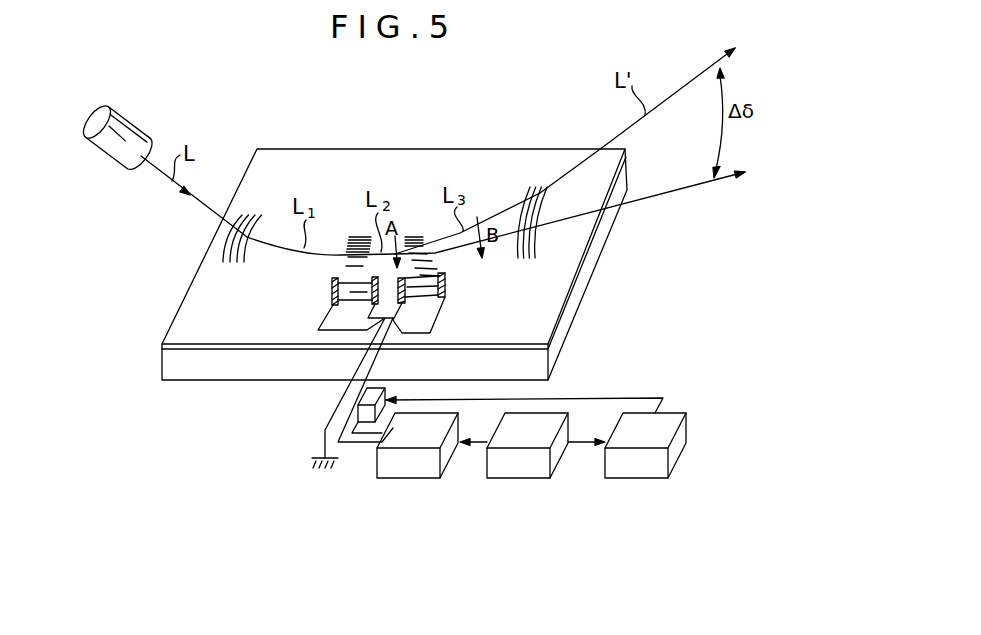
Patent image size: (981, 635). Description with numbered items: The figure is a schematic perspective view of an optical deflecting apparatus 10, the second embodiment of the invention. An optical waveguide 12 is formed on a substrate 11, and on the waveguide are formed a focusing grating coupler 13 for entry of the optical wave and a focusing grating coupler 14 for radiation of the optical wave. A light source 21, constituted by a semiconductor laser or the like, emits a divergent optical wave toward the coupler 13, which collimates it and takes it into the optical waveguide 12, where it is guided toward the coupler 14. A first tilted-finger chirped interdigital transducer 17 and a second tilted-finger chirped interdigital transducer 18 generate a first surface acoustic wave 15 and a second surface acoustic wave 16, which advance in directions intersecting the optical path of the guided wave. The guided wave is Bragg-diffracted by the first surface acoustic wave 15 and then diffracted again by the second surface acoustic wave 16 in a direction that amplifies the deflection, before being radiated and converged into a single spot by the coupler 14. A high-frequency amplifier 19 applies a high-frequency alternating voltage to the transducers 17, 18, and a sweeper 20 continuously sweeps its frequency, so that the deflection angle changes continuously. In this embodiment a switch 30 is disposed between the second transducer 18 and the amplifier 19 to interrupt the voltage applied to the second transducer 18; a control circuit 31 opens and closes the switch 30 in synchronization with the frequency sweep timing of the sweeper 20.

The optical deflecting apparatus 10 is at (492, 130).
The substrate 11 is at (260, 368).
The optical waveguide 12 is at (192, 309).
The focusing grating coupler for entry of the optical wave 13 is at (256, 213).
The focusing grating coupler for radiation of the optical wave 14 is at (526, 194).
The first surface acoustic wave 15 is at (360, 237).
The second surface acoustic wave 16 is at (413, 236).
The first tilted-finger chirped interdigital transducer 17 is at (332, 291).
The second tilted-finger chirped interdigital transducer 18 is at (446, 292).
The high-frequency amplifier 19 is at (415, 463).
The sweeper 20 is at (522, 465).
The light source 21 is at (137, 127).
The switch 30 is at (368, 424).
The control circuit 31 is at (637, 463).